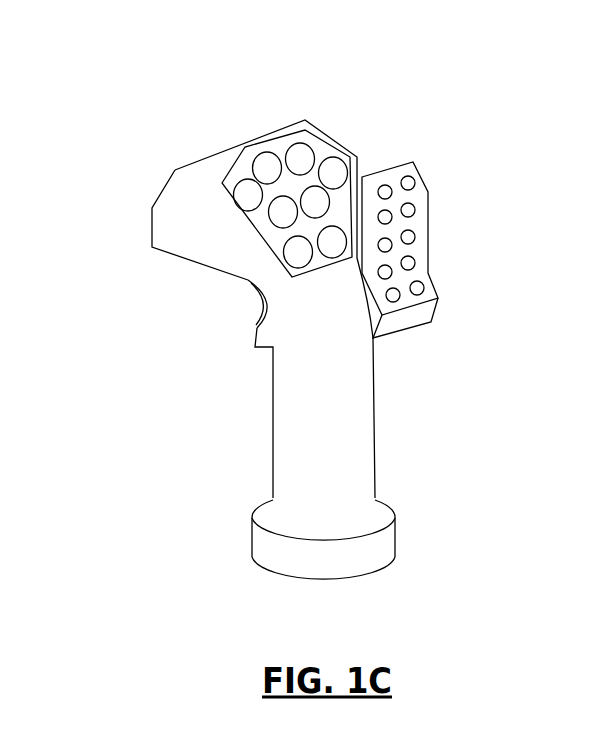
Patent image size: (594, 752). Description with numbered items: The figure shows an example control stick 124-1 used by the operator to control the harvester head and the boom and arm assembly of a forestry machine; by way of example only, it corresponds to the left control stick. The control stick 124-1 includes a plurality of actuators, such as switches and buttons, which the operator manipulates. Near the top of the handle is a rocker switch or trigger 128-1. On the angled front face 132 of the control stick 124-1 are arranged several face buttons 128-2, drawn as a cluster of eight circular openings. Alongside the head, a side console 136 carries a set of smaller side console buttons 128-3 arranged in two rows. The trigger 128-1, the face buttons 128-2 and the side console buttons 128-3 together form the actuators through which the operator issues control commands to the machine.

The control stick 124-1 is at (106, 122).
The rocker switch or trigger 128-1 is at (262, 308).
The face buttons 128-2 is at (302, 176).
The face 132 is at (325, 148).
The side console buttons 128-3 is at (436, 230).
The side console 136 is at (432, 230).